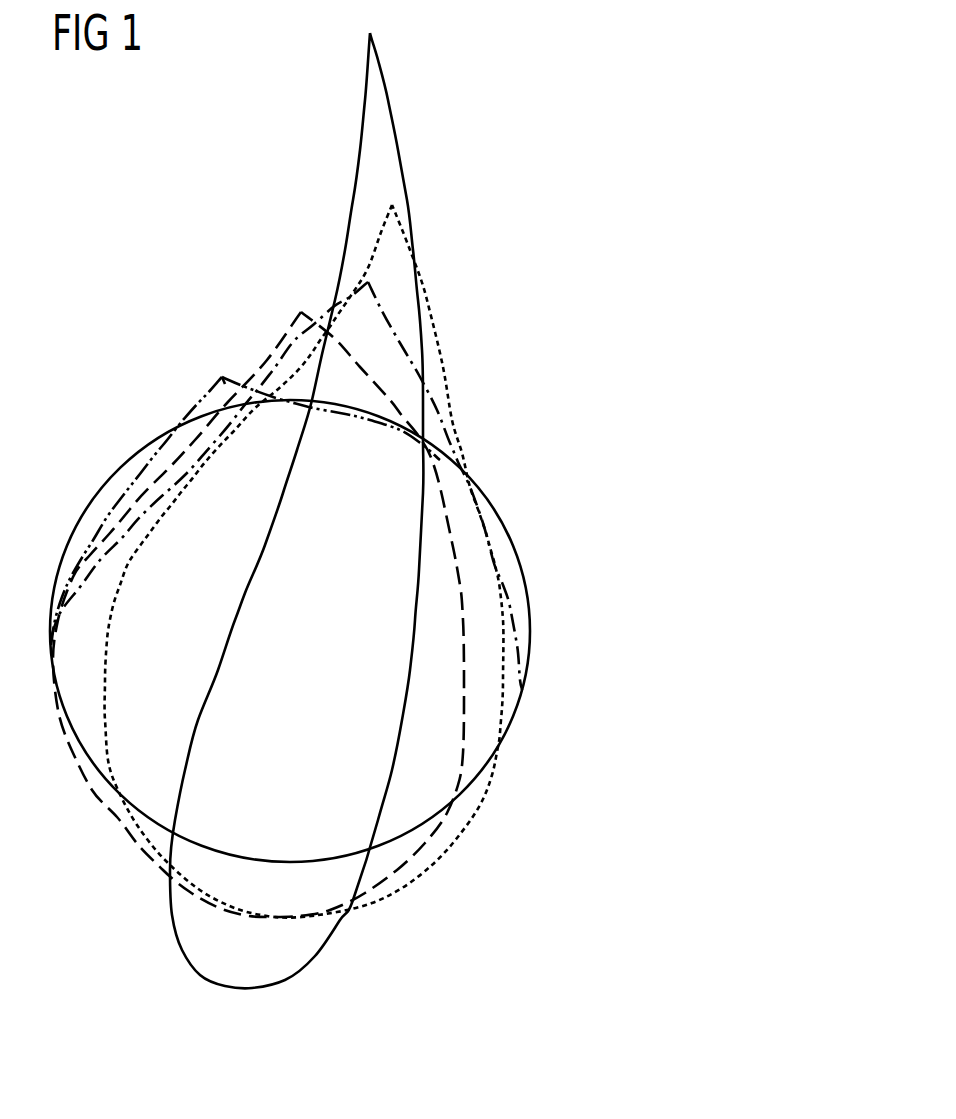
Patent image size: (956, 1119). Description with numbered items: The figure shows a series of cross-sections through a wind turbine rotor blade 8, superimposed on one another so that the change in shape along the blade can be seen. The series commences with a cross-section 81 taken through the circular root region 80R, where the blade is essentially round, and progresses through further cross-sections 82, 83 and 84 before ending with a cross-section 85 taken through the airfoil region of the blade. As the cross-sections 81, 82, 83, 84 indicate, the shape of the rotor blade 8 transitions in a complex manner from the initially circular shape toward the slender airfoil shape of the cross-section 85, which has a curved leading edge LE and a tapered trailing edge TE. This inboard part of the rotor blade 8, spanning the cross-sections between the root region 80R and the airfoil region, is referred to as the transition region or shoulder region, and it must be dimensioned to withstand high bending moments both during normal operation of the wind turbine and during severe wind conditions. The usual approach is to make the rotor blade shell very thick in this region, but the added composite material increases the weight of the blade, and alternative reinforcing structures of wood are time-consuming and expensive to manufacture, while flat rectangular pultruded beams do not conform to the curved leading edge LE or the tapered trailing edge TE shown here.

The wind turbine rotor blade 8 is at (431, 510).
The circular root region 80R is at (528, 612).
The cross-section 81 is at (190, 417).
The cross-section 82 is at (283, 332).
The cross-section 83 is at (393, 323).
The cross-section 84 is at (448, 370).
The cross-section 85 is at (402, 178).
The trailing edge TE is at (275, 183).
The leading edge LE is at (405, 950).